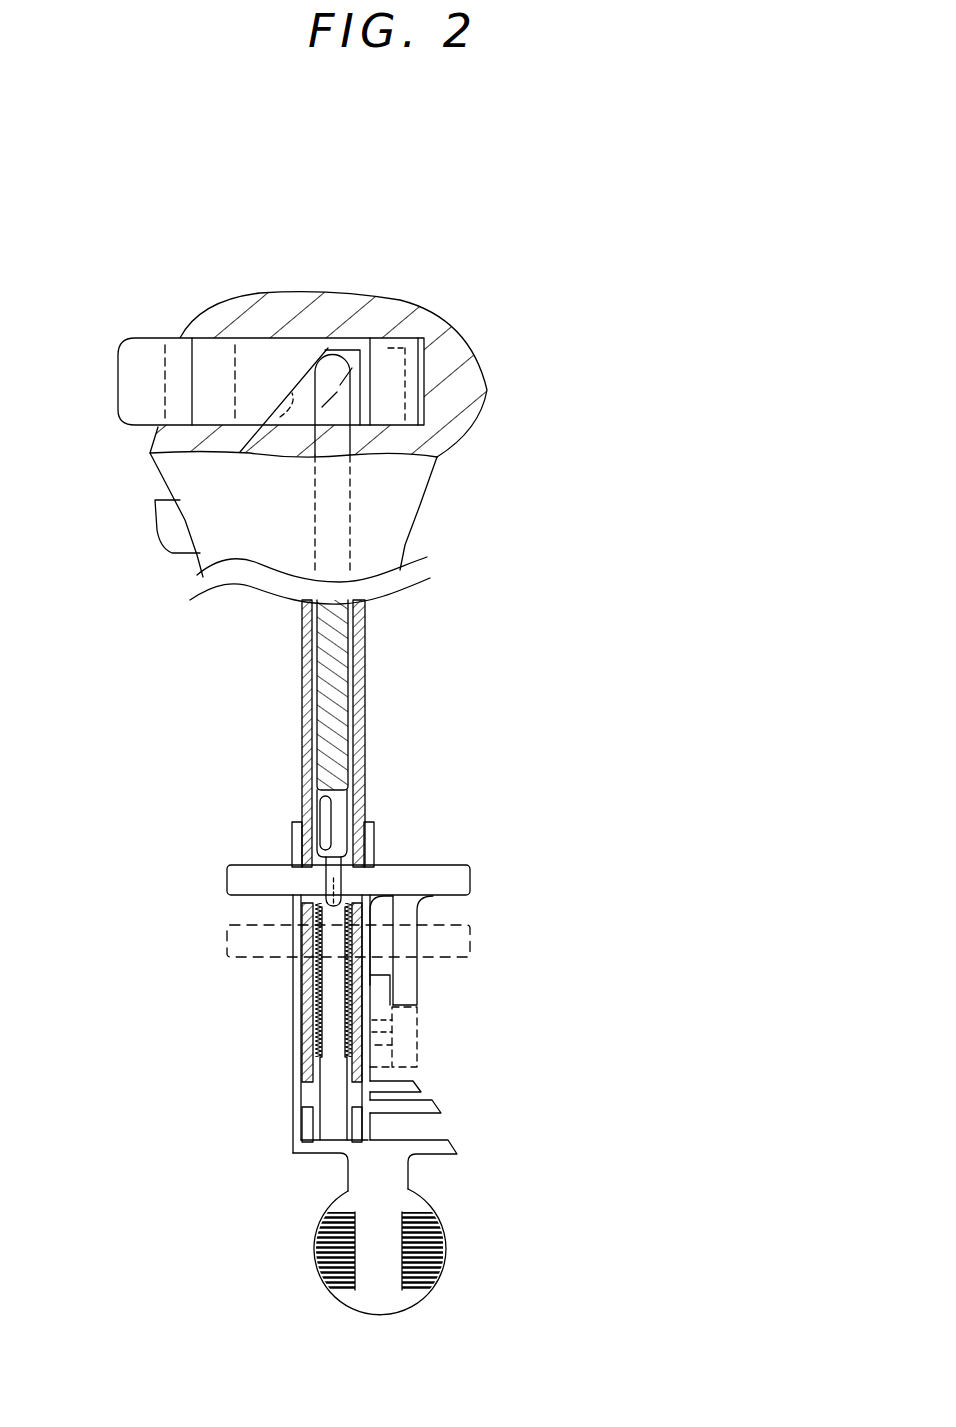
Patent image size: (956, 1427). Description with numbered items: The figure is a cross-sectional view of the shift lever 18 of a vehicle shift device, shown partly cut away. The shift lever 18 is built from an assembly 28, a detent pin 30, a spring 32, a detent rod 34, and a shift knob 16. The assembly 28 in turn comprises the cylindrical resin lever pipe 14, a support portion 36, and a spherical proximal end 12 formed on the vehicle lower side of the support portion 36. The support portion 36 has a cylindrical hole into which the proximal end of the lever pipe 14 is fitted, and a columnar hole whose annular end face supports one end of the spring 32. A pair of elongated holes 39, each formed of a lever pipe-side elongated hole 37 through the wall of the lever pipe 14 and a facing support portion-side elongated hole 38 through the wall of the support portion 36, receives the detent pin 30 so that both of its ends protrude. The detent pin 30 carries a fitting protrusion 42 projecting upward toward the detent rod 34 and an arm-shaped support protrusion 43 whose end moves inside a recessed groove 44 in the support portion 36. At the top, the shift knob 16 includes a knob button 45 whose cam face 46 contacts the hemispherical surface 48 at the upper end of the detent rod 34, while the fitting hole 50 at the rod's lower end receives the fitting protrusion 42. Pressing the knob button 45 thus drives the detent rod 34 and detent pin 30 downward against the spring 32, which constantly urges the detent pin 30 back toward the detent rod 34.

The spherical proximal end 12 is at (415, 1197).
The lever pipe 14 is at (358, 655).
The shift knob 16 is at (453, 368).
The shift lever 18 is at (606, 162).
The assembly 28 is at (571, 518).
The detent pin 30 is at (538, 826).
The spring 32 is at (300, 1022).
The detent rod 34 is at (325, 708).
The support portion 36 is at (200, 997).
The lever pipe-side elongated hole 37 is at (368, 845).
The support portion-side elongated hole 38 is at (292, 843).
The elongated hole 39 is at (401, 849).
The fitting protrusion 42 is at (335, 798).
The support protrusion 43 is at (405, 993).
The recessed groove 44 is at (373, 1032).
The knob button 45 is at (137, 352).
The cam face 46 is at (240, 452).
The hemispherical surface 48 is at (345, 352).
The fitting hole 50 is at (303, 768).